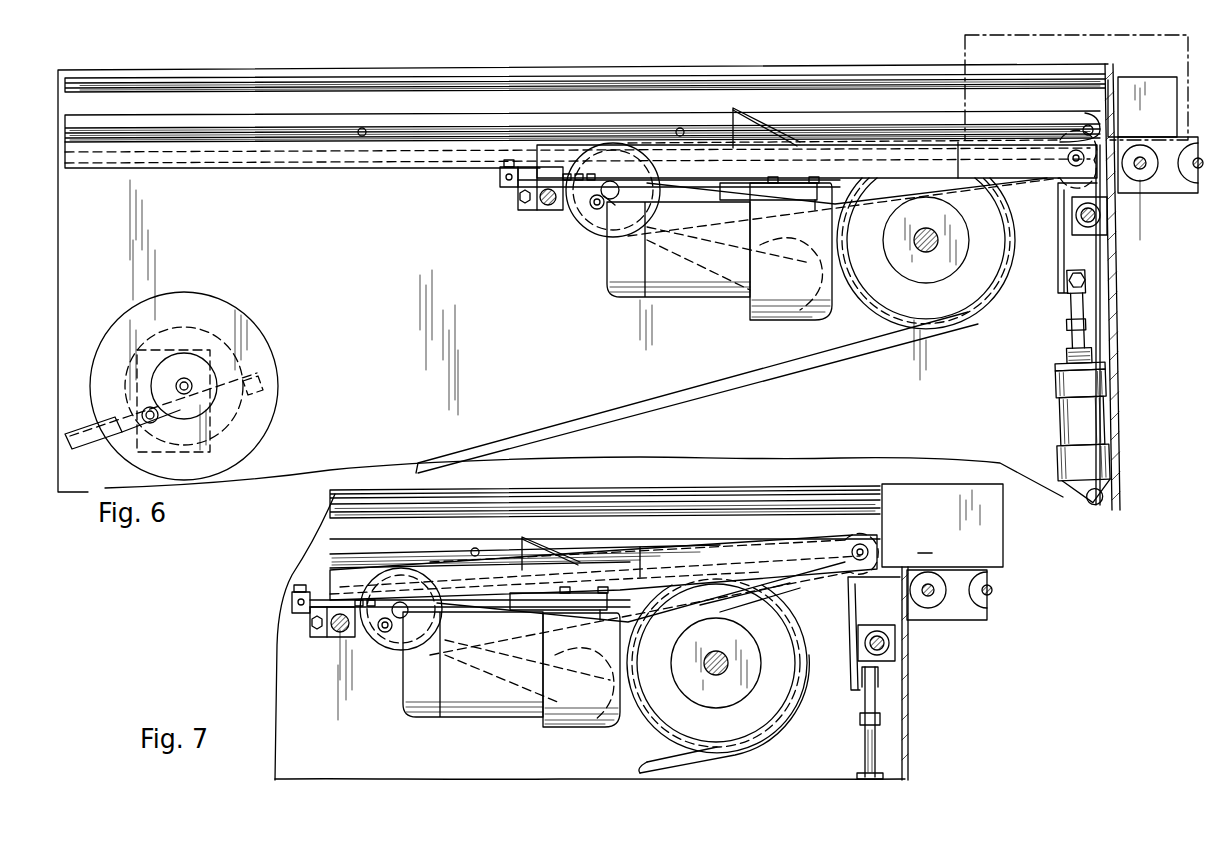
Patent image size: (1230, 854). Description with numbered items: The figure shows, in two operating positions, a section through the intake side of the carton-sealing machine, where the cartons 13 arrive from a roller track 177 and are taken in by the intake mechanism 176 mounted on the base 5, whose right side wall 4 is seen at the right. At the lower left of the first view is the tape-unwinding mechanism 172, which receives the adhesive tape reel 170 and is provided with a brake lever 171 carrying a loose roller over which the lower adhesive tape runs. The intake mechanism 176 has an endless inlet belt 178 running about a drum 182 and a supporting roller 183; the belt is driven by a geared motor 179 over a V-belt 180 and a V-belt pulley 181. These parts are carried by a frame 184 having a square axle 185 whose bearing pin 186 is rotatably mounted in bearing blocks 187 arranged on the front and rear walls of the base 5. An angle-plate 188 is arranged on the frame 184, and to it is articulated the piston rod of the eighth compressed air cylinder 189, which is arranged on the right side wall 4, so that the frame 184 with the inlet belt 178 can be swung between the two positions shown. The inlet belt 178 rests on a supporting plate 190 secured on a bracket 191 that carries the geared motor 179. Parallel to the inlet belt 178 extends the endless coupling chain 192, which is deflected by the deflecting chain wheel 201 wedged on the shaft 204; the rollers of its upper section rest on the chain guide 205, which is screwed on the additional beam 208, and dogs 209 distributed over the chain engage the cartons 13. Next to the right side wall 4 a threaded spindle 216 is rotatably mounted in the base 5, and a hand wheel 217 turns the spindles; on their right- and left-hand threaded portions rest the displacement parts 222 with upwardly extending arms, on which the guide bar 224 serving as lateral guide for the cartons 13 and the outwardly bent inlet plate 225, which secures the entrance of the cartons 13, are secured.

In FIG. 6, the right side wall 4 is at (1118, 357).
In FIG. 6, the base 5 is at (261, 478).
In FIG. 7, the base 5 is at (274, 710).
In FIG. 6, the carton 13 is at (962, 50).
In FIG. 7, the carton 13 is at (1008, 542).
In FIG. 6, the adhesive tape reel 170 is at (199, 386).
In FIG. 6, the brake lever 171 is at (86, 445).
In FIG. 6, the tape-unwinding mechanism 172 is at (240, 310).
In FIG. 6, the intake mechanism 176 is at (836, 137).
In FIG. 7, the intake mechanism 176 is at (714, 545).
In FIG. 6, the roller track 177 is at (1185, 198).
In FIG. 7, the roller track 177 is at (965, 628).
In FIG. 6, the endless inlet belt 178 is at (908, 156).
In FIG. 7, the endless inlet belt 178 is at (790, 588).
In FIG. 6, the geared motor 179 is at (702, 297).
In FIG. 7, the geared motor 179 is at (472, 718).
In FIG. 6, the V-belt 180 is at (610, 238).
In FIG. 7, the V-belt 180 is at (412, 652).
In FIG. 6, the V-belt pulley 181 is at (600, 218).
In FIG. 7, the V-belt pulley 181 is at (410, 640).
In FIG. 6, the drum 182 is at (618, 228).
In FIG. 7, the drum 182 is at (385, 642).
In FIG. 6, the supporting roller 183 is at (1078, 150).
In FIG. 7, the supporting roller 183 is at (862, 545).
In FIG. 6, the frame 184 is at (670, 152).
In FIG. 7, the frame 184 is at (770, 552).
In FIG. 6, the square axle 185 is at (532, 211).
In FIG. 7, the square axle 185 is at (330, 638).
In FIG. 6, the bearing pin 186 is at (550, 206).
In FIG. 7, the bearing pin 186 is at (341, 632).
In FIG. 6, the bearing block 187 is at (518, 203).
In FIG. 6, the angle-plate 188 is at (1058, 262).
In FIG. 7, the angle-plate 188 is at (850, 645).
In FIG. 6, the eighth compressed air cylinder 189 is at (1058, 404).
In FIG. 7, the eighth compressed air cylinder 189 is at (878, 745).
In FIG. 6, the supporting plate 190 is at (958, 142).
In FIG. 7, the supporting plate 190 is at (640, 556).
In FIG. 6, the bracket 191 is at (772, 200).
In FIG. 7, the bracket 191 is at (578, 610).
In FIG. 6, the endless coupling chain 192 is at (686, 393).
In FIG. 7, the endless coupling chain 192 is at (650, 772).
In FIG. 6, the deflecting chain wheel 201 is at (962, 308).
In FIG. 7, the deflecting chain wheel 201 is at (790, 708).
In FIG. 6, the shaft 204 is at (928, 245).
In FIG. 7, the shaft 204 is at (716, 660).
In FIG. 6, the chain guide 205 is at (404, 163).
In FIG. 7, the chain guide 205 is at (306, 575).
In FIG. 6, the additional beam 208 is at (499, 178).
In FIG. 7, the additional beam 208 is at (299, 614).
In FIG. 6, the dog 209 is at (788, 138).
In FIG. 7, the dog 209 is at (527, 546).
In FIG. 6, the threaded spindle 216 is at (1100, 220).
In FIG. 7, the hand wheel 217 is at (890, 646).
In FIG. 6, the displacement part 222 is at (1108, 202).
In FIG. 7, the displacement part 222 is at (895, 622).
In FIG. 6, the guide bar 224 is at (414, 78).
In FIG. 6, the inlet plate 225 is at (1150, 88).